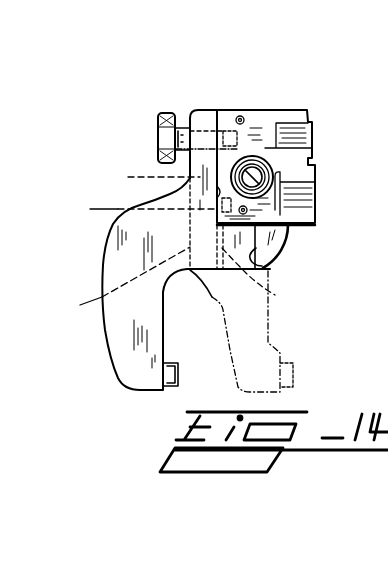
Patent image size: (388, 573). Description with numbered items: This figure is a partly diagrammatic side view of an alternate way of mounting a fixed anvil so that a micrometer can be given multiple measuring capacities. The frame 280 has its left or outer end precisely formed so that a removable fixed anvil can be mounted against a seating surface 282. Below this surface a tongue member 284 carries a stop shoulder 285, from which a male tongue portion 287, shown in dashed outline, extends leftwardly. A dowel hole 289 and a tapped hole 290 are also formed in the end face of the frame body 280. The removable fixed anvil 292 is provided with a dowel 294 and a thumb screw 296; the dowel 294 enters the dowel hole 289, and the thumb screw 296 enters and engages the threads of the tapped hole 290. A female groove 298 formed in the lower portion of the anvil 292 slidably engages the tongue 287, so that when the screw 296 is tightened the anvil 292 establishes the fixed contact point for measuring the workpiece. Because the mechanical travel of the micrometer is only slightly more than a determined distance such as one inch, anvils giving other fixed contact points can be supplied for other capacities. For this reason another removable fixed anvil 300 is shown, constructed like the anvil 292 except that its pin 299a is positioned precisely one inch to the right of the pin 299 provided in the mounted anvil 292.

The frame 280 is at (258, 120).
The seating surface 282 is at (203, 110).
The tongue member 284 is at (280, 238).
The stop shoulder 285 is at (262, 266).
The male tongue portion 287 is at (276, 296).
The dowel hole 289 is at (144, 176).
The tapped hole 290 is at (228, 108).
The removable fixed anvil 292 is at (113, 253).
The dowel 294 is at (133, 209).
The thumb screw 296 is at (160, 114).
The female groove 298 is at (114, 282).
The pin 299 is at (172, 387).
The pin 299a is at (294, 371).
The removable fixed anvil 300 is at (270, 339).